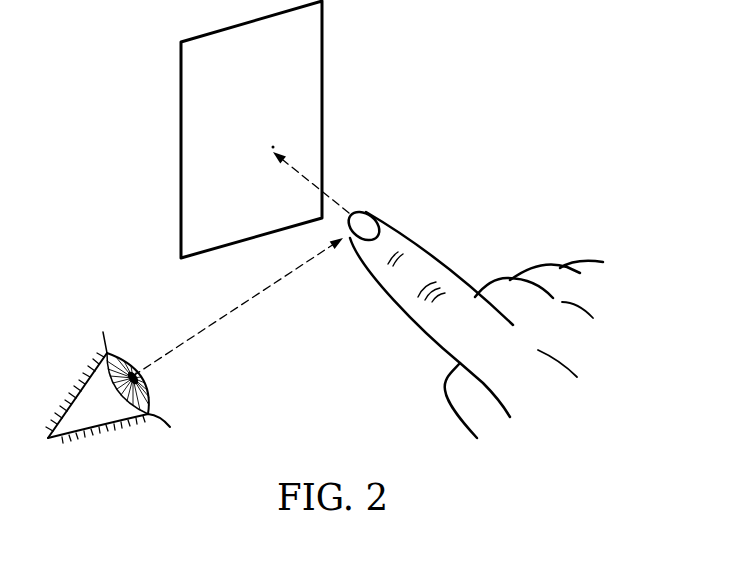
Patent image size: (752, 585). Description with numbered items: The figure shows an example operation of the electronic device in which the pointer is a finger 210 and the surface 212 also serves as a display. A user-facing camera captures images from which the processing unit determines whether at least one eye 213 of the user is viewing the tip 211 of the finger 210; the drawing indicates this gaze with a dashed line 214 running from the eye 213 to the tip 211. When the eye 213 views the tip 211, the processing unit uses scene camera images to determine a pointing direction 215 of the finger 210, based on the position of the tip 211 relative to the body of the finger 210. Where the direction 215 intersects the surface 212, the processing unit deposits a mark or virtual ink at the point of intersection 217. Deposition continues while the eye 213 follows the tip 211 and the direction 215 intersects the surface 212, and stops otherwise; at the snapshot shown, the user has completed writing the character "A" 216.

The finger 210 is at (428, 262).
The tip of the finger 211 is at (360, 212).
The surface 212 is at (181, 145).
The eye 213 is at (75, 432).
The gaze line from eye to fingertip 214 is at (232, 313).
The pointing direction 215 is at (307, 178).
The character "A" 216 is at (258, 110).
The point of intersection 217 is at (273, 145).